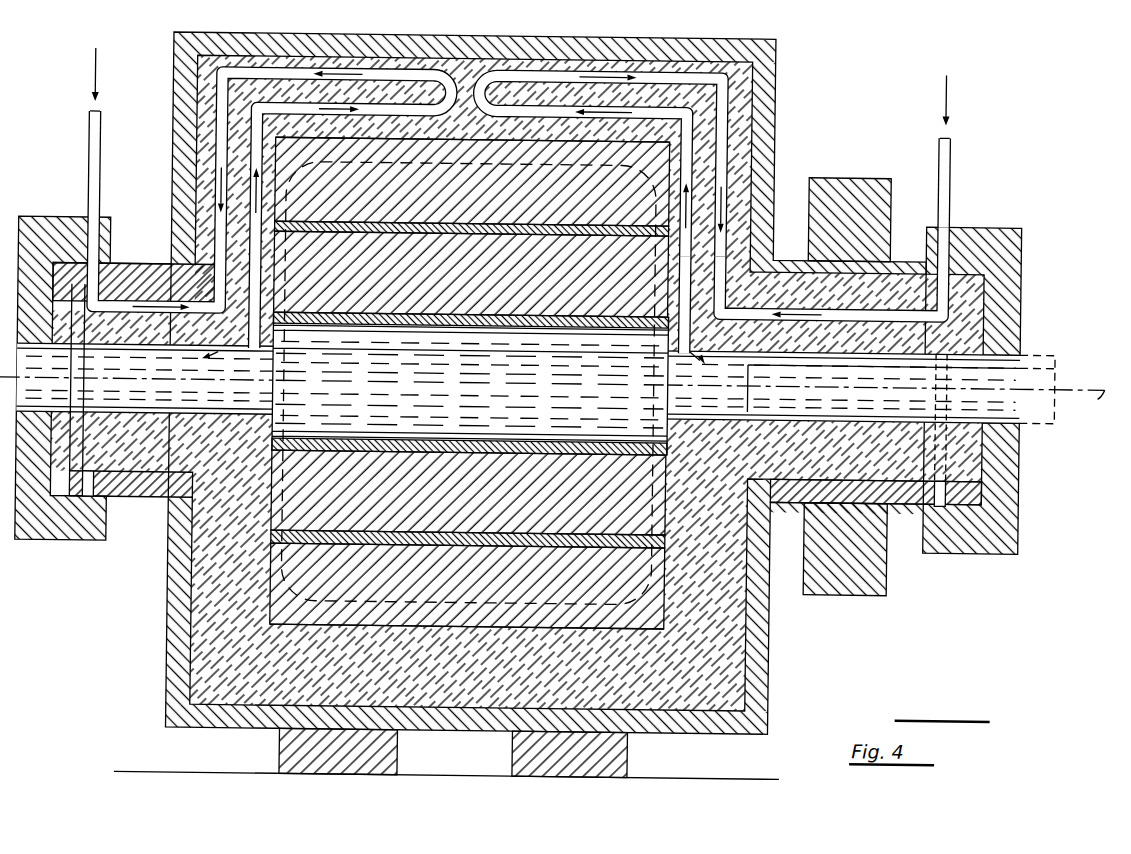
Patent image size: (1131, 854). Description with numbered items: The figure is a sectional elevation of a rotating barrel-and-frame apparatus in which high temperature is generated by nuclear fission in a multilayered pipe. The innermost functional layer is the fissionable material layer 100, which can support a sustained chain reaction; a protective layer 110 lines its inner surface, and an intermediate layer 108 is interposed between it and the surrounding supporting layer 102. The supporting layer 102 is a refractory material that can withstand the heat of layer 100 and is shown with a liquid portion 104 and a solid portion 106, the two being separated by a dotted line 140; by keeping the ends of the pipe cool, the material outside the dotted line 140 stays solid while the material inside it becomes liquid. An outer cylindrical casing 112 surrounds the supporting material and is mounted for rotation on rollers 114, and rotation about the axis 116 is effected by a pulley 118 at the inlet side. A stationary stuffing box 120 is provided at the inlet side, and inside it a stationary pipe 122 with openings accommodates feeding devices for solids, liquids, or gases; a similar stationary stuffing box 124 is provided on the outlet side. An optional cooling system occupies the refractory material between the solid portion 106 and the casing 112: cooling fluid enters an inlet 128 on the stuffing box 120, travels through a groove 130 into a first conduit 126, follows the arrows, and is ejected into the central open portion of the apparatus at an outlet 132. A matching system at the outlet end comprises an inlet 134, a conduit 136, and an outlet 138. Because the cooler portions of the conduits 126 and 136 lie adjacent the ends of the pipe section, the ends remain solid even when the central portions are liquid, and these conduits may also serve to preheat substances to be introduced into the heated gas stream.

The fissionable material layer 100 is at (555, 321).
The supporting layer 102 is at (369, 175).
The liquid region 104 is at (465, 182).
The solid region 106 is at (446, 157).
The intermediate layer 108 is at (605, 234).
The protective layer 110 is at (308, 438).
The outer cylindrical casing 112 is at (464, 31).
The rollers 114 is at (303, 747).
The axis 116 is at (497, 372).
The pulley 118 is at (840, 171).
The stationary stuffing box 120 is at (1018, 236).
The stationary pipe 122 is at (1034, 353).
The stationary stuffing box 124 is at (59, 224).
The first conduit 126 is at (726, 136).
The inlet 128 is at (948, 148).
The groove 130 is at (943, 269).
The outlet 132 is at (711, 321).
The inlet 134 is at (96, 134).
The conduit 136 is at (218, 103).
The outlet 138 is at (227, 343).
The dotted line 140 is at (549, 164).